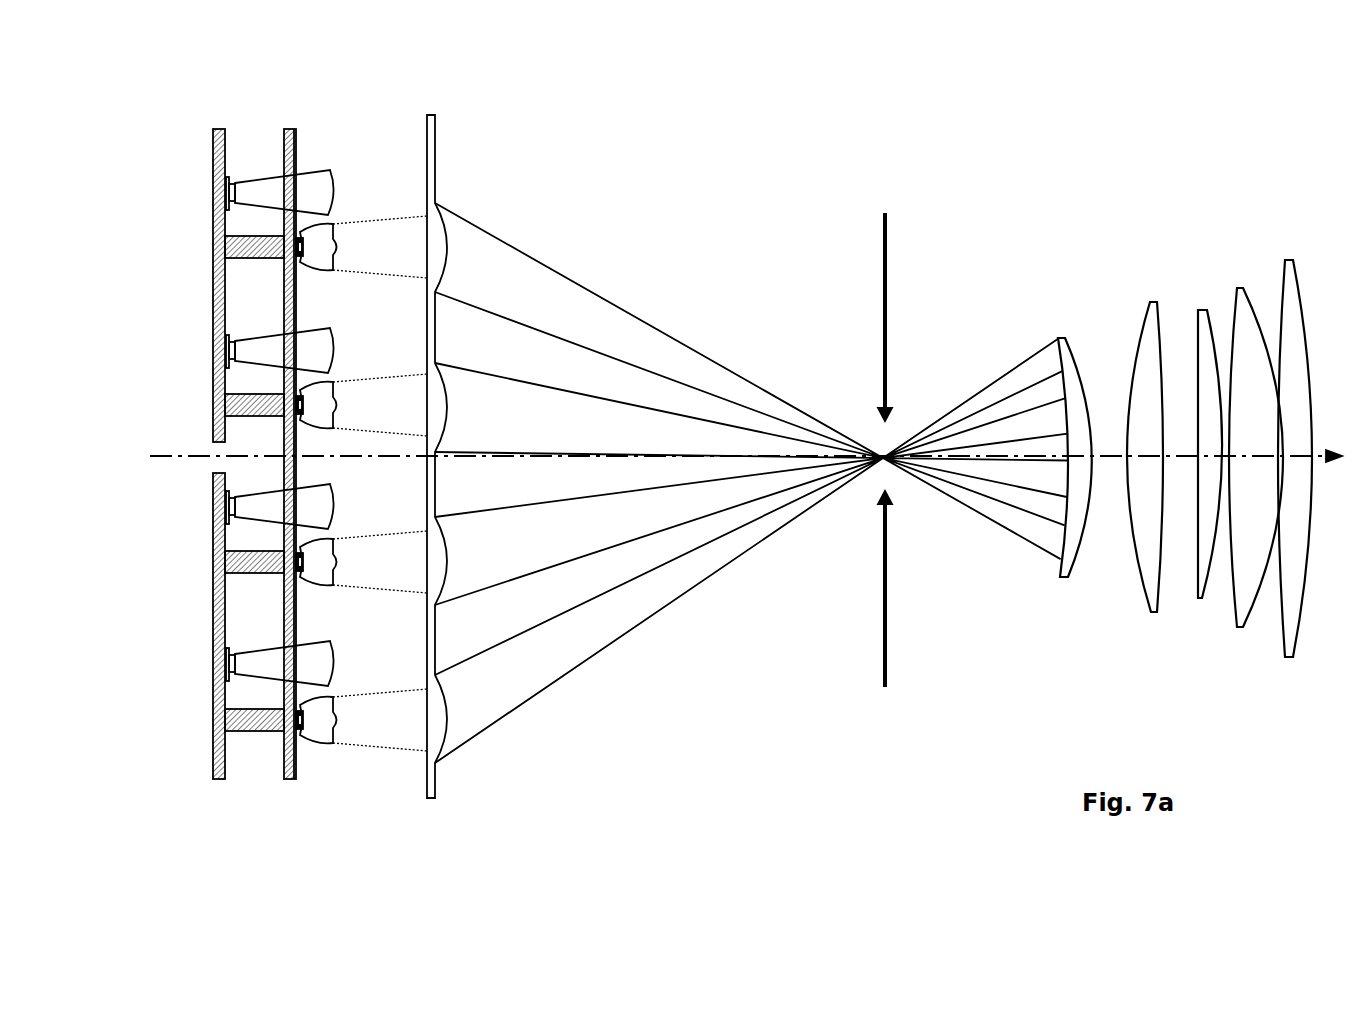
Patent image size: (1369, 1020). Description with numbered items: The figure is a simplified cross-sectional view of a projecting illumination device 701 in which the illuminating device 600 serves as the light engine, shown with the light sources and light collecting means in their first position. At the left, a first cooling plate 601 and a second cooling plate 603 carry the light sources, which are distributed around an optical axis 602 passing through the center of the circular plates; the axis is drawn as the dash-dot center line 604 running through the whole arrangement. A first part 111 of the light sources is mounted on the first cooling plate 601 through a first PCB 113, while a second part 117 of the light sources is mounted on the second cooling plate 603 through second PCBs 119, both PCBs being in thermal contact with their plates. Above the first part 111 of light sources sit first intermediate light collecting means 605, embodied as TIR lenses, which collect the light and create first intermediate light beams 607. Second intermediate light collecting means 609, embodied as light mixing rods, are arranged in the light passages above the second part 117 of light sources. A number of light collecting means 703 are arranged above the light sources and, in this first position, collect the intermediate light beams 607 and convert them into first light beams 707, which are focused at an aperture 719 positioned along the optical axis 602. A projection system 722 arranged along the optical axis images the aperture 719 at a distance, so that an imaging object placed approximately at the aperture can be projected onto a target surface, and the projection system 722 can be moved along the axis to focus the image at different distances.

The illuminating device 600 is at (258, 786).
The first cooling plate 601 is at (292, 130).
The optical axis 602 is at (1340, 458).
The second cooling plate 603 is at (220, 140).
The optical axis 604 is at (739, 445).
The first intermediate light collecting means 605 is at (328, 235).
The first intermediate light beams 607 is at (363, 483).
The second intermediate light collecting means 609 is at (298, 190).
The light collecting means 703 is at (436, 112).
The first light beams 707 is at (751, 483).
The aperture 719 is at (885, 690).
The projection system 722 is at (1013, 318).
The projecting illumination device 701 is at (1120, 158).
The first part of the light sources 111 is at (297, 246).
The first PCB 113 is at (296, 296).
The second part of the light sources 117 is at (226, 203).
The second PCBs 119 is at (224, 198).